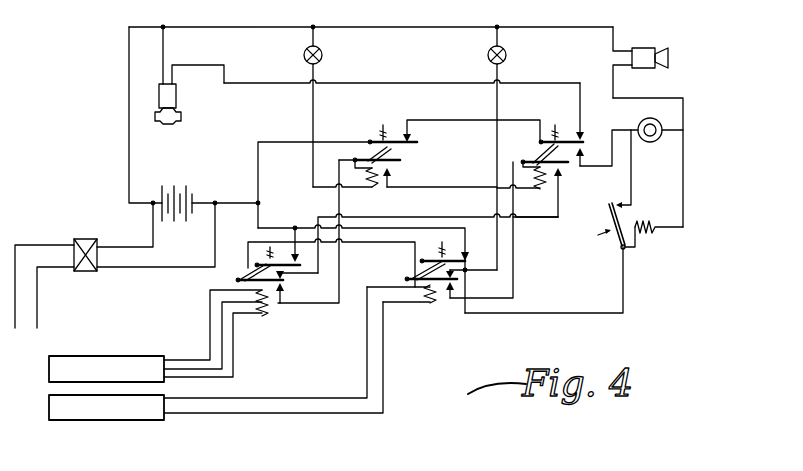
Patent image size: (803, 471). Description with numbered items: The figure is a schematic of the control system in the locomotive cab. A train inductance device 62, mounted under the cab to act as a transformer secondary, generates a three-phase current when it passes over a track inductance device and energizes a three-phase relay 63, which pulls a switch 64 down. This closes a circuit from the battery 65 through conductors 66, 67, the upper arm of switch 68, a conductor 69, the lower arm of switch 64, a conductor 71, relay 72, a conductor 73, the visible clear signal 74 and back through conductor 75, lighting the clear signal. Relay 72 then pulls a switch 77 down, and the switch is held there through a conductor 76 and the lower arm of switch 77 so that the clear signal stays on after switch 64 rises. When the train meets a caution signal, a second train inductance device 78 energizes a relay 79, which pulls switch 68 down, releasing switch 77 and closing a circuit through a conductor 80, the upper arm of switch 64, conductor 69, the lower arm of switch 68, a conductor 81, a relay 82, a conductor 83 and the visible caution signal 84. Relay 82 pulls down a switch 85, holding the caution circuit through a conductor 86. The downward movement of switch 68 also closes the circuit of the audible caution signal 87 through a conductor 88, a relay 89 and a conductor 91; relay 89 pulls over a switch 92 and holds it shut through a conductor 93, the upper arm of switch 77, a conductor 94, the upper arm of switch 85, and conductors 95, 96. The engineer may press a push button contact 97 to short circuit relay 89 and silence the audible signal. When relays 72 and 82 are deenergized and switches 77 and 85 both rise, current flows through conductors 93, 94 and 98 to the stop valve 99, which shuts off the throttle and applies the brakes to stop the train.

The train inductance device 62 is at (105, 356).
The three-phase relay 63 is at (263, 317).
The switch 64 is at (238, 275).
The battery 65 is at (190, 186).
The conductor 66 is at (230, 203).
The conductor 67 is at (275, 227).
The switch 68 is at (412, 275).
The conductor 69 is at (248, 242).
The conductor 71 is at (302, 304).
The relay 72 is at (378, 190).
The conductor 73 is at (315, 111).
The visible clear signal 74 is at (323, 56).
The conductor 75 is at (242, 27).
The conductor 76 is at (458, 187).
The switch 77 is at (412, 148).
The train inductance device 78 is at (108, 420).
The relay 79 is at (432, 307).
The conductor 80 is at (296, 257).
The conductor 81 is at (514, 282).
The relay 82 is at (540, 191).
The conductor 83 is at (500, 104).
The visible caution signal 84 is at (507, 56).
The switch 85 is at (536, 153).
The conductor 86 is at (449, 217).
The audible caution signal 87 is at (642, 51).
The conductor 88 is at (586, 312).
The relay 89 is at (646, 236).
The conductor 91 is at (685, 165).
The switch 92 is at (609, 227).
The conductor 93 is at (262, 141).
The conductor 94 is at (455, 120).
The conductor 95 is at (611, 131).
The conductor 96 is at (632, 190).
The push button contact 97 is at (653, 122).
The conductor 98 is at (410, 83).
The stop valve 99 is at (178, 97).